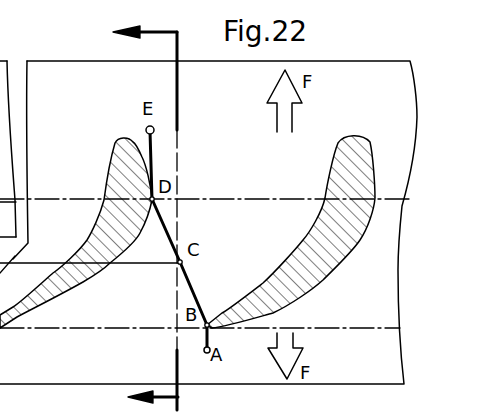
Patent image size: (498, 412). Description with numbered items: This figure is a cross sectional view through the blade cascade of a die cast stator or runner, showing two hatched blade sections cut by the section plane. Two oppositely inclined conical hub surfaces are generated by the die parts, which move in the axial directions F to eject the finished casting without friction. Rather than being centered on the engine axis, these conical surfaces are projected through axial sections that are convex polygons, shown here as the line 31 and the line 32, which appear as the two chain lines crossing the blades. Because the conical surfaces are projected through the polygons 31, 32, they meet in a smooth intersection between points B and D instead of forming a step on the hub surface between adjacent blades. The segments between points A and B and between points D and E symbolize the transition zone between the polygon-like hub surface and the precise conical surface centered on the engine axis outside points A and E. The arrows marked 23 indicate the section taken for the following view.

The section line 23-23 (sectional view indicator) 23 is at (130, 216).
The polygon line 31 is at (122, 328).
The polygon line 32 is at (53, 197).